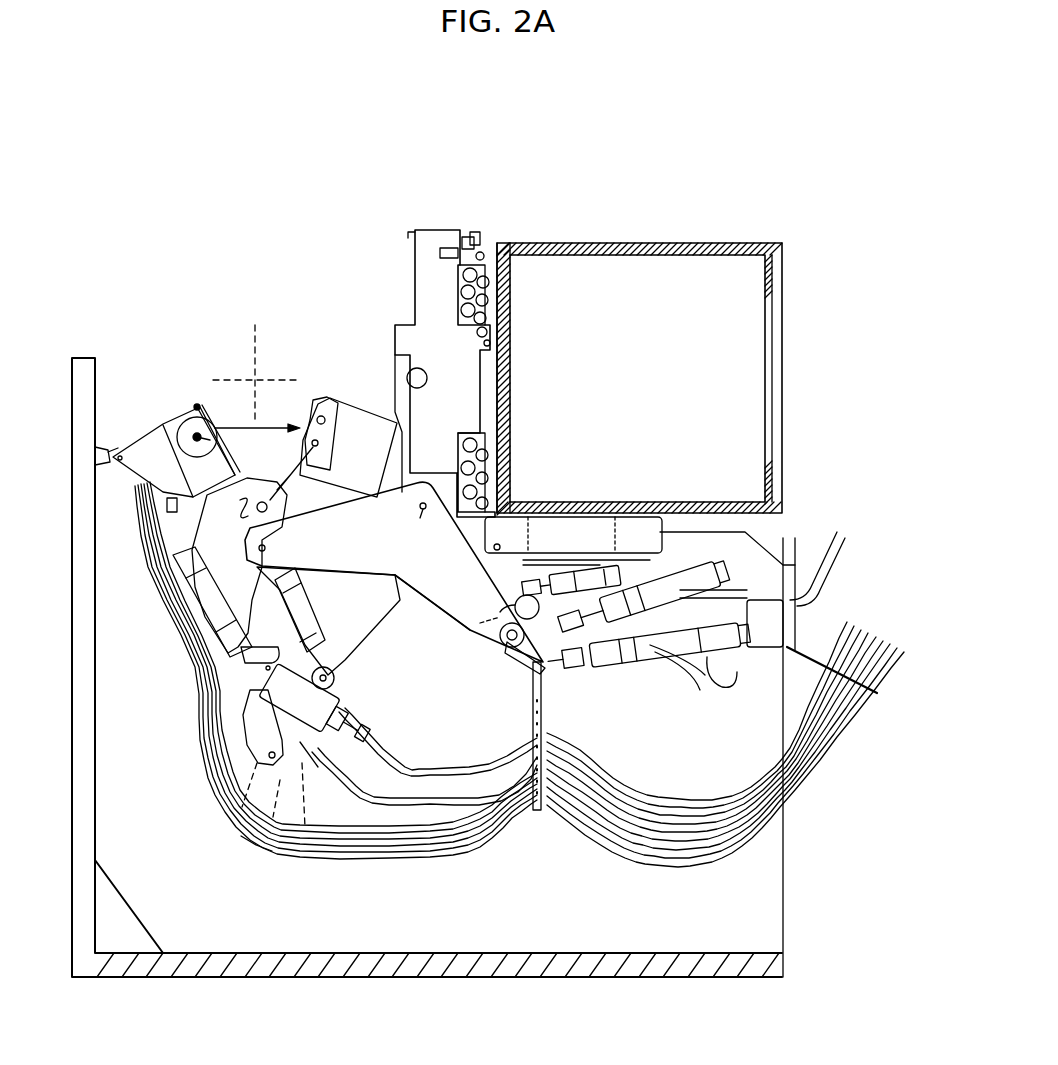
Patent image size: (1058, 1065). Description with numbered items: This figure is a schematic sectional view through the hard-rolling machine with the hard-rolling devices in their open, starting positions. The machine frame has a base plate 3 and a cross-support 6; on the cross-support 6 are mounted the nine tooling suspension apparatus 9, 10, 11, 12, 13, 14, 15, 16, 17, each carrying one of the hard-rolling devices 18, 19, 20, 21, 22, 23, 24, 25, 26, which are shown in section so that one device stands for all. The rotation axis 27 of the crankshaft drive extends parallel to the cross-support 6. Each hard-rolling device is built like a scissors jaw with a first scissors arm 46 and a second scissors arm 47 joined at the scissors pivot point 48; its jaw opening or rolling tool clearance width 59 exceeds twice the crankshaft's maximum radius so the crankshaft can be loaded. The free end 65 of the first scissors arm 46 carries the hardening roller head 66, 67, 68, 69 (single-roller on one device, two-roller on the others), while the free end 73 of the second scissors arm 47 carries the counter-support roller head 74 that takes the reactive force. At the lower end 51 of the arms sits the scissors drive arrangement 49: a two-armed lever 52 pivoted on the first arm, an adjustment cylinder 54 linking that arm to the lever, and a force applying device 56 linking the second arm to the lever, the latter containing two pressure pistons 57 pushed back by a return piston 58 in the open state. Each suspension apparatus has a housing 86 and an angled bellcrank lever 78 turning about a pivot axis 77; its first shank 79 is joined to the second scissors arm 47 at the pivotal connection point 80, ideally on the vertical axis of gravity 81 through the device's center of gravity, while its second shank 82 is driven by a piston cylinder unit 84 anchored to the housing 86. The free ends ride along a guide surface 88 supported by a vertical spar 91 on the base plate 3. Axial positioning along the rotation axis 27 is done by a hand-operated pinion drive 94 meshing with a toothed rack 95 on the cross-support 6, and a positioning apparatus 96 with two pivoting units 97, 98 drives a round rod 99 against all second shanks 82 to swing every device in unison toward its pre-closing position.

The base plate 3 is at (652, 966).
The cross-support 6 is at (790, 268).
The tooling suspension apparatus 9 is at (500, 295).
The tooling suspension apparatus 10 is at (470, 275).
The tooling suspension apparatus 11 is at (483, 282).
The tooling suspension apparatus 12 is at (468, 292).
The tooling suspension apparatus 13 is at (474, 309).
The tooling suspension apparatus 14 is at (470, 445).
The tooling suspension apparatus 15 is at (482, 455).
The tooling suspension apparatus 16 is at (474, 472).
The tooling suspension apparatus 17 is at (475, 497).
The hard-rolling device 18 is at (509, 491).
The hard-rolling device 19 is at (697, 711).
The hard-rolling device 20 is at (700, 717).
The hard-rolling device 21 is at (704, 723).
The hard-rolling device 22 is at (707, 728).
The hard-rolling device 23 is at (711, 734).
The hard-rolling device 24 is at (715, 741).
The hard-rolling device 25 is at (718, 747).
The hard-rolling device 26 is at (722, 753).
The rotation axis 27 is at (253, 377).
The first scissors arm 46 is at (114, 426).
The second scissors arm 47 is at (385, 407).
The scissors pivot point 48 is at (268, 512).
The scissors drive arrangement 49 is at (318, 767).
The lower end of second scissors arm 51 is at (348, 655).
The two-armed lever 52 is at (234, 740).
The adjustment cylinder 54 is at (255, 575).
The force applying device 56 is at (359, 703).
The pressure pistons 57 is at (240, 792).
The return piston 58 is at (258, 838).
The rolling tool clearance width 59 is at (255, 428).
The free end of first scissors arm 65 is at (155, 445).
The hardening roller head 66 is at (238, 355).
The hardening roller head 67 is at (197, 437).
The hardening roller head 68 is at (197, 396).
The hardening roller head 69 is at (218, 440).
The free end of second scissors arm 73 is at (350, 427).
The counter-support roller head 74 is at (322, 386).
The pivot axis 77 is at (394, 572).
The angled bellcrank lever 78 is at (427, 610).
The first shank 79 is at (323, 560).
The pivotal connection point 80 is at (266, 548).
The vertical axis of gravity 81 is at (280, 582).
The second shank 82 is at (477, 625).
The piston cylinder unit 84 is at (585, 641).
The housing 86 is at (767, 661).
The guide surface 88 is at (104, 467).
The vertical spar 91 is at (76, 672).
The pinion drive 94 is at (478, 220).
The toothed rack 95 is at (482, 245).
The positioning apparatus 96 is at (680, 527).
The pivoting unit 97 is at (613, 516).
The pivoting unit 98 is at (586, 541).
The round rod 99 is at (507, 607).